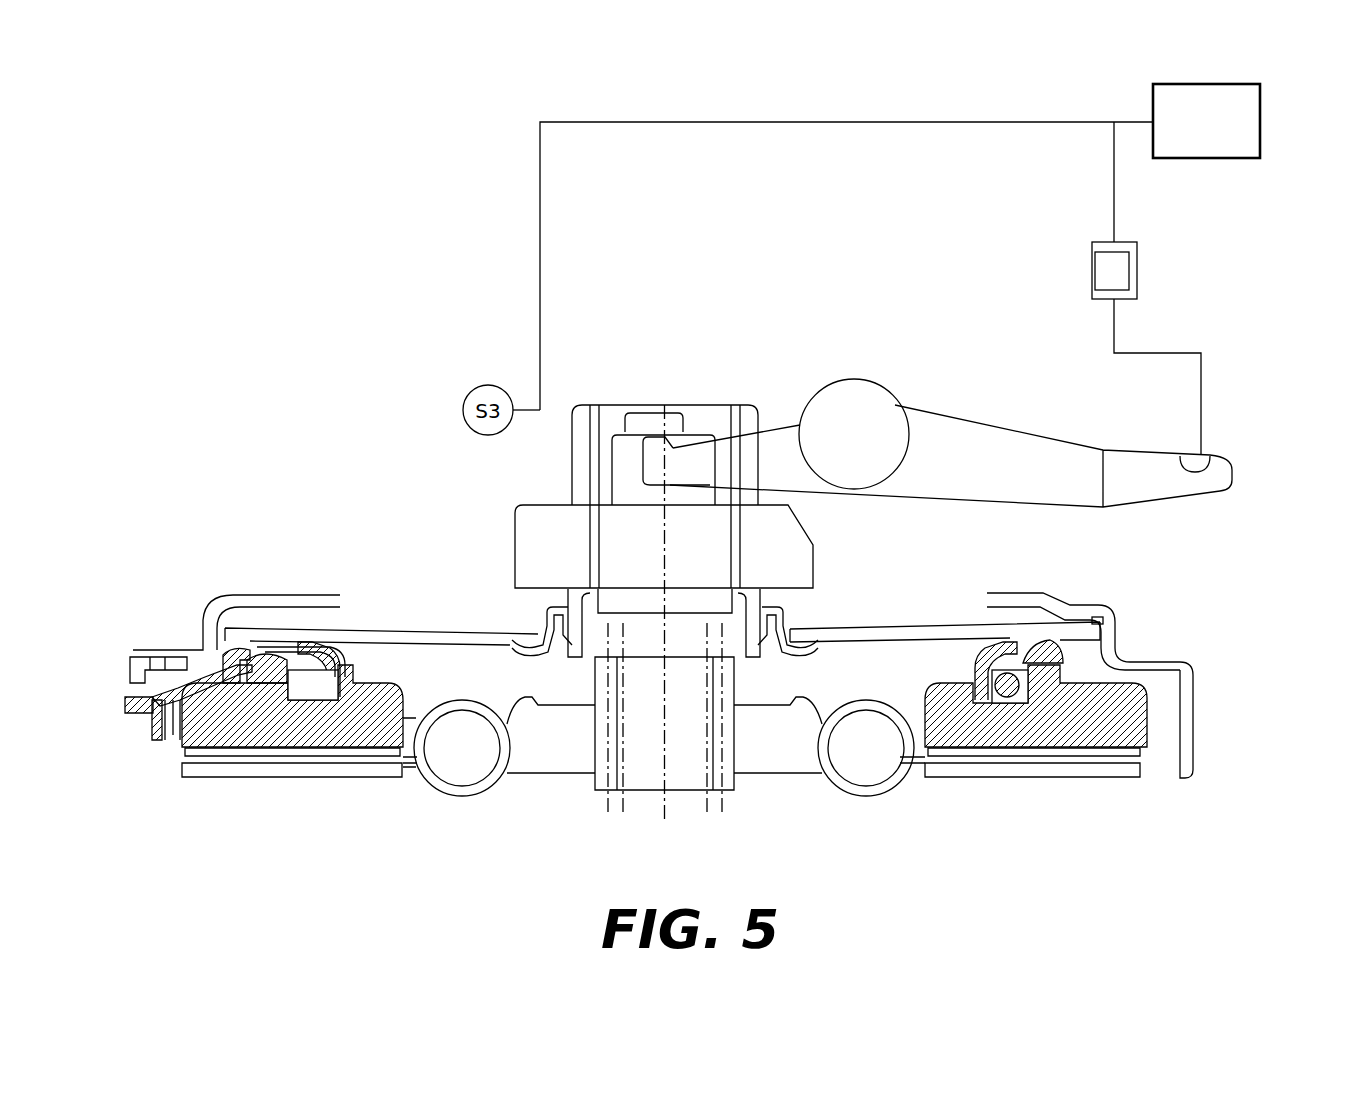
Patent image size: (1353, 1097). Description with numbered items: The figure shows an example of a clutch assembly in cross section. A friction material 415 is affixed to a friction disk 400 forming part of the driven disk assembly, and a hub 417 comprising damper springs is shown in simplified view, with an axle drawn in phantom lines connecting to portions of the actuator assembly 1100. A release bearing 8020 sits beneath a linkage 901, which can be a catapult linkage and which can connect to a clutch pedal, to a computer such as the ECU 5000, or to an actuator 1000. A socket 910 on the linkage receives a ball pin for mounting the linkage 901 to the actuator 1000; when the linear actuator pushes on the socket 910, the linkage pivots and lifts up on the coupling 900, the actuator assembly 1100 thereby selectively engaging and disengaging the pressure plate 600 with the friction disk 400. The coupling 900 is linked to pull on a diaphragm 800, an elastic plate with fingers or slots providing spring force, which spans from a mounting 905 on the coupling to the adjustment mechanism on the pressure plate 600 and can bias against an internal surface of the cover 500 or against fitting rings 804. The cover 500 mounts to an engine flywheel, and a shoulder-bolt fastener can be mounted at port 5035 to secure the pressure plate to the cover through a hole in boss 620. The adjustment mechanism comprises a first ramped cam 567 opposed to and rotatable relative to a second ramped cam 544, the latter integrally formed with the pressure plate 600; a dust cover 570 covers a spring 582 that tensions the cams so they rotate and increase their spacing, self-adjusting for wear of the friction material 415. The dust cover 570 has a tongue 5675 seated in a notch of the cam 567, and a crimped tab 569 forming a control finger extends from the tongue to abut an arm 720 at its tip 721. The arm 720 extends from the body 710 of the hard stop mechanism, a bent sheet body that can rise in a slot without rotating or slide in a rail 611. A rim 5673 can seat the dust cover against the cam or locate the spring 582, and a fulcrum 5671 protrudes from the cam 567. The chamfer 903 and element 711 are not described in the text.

The ECU 5000 is at (1262, 104).
The actuator 1000 is at (1140, 258).
The actuator assembly 1100 is at (953, 232).
The coupling 900 is at (748, 400).
The linkage 901 is at (877, 384).
The socket 910 is at (1193, 455).
The chamfer 903 is at (798, 513).
The release bearing 8020 is at (515, 522).
The diaphragm 800 is at (445, 628).
The mounting 905 is at (805, 655).
The hub 417 is at (535, 778).
The friction disk 400 is at (1143, 762).
The friction material 415 is at (205, 782).
The spring 582 is at (1010, 700).
The dust cover 570 is at (975, 655).
The second ramped cam 544 is at (1063, 668).
The first ramped cam 567 is at (1063, 628).
The fitting rings 804 is at (1103, 620).
The pressure plate 600 is at (1165, 660).
The cover 500 is at (1193, 730).
The tongue 5675 is at (245, 683).
The fulcrum 5671 is at (285, 625).
The tip 721 is at (248, 656).
The rim 5673 is at (268, 632).
The crimped tab 569 is at (240, 665).
The arm 720 is at (196, 686).
The port 5035 is at (136, 658).
The boss 620 is at (128, 702).
The body 710 is at (153, 725).
The pin bore 711 is at (170, 720).
The rail 611 is at (178, 705).